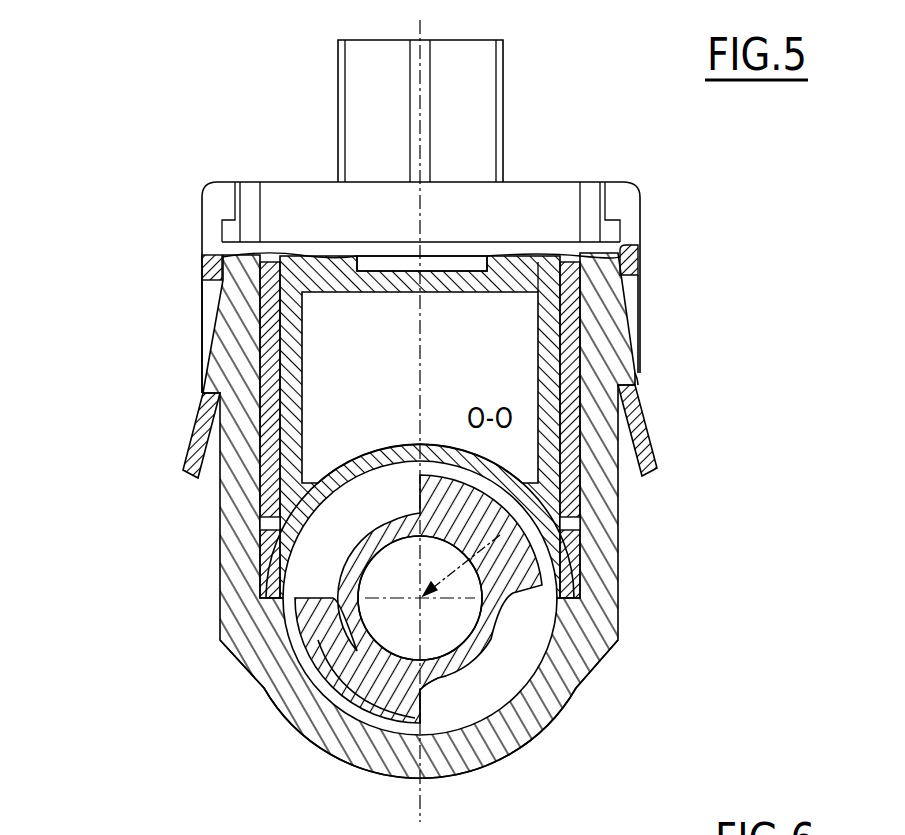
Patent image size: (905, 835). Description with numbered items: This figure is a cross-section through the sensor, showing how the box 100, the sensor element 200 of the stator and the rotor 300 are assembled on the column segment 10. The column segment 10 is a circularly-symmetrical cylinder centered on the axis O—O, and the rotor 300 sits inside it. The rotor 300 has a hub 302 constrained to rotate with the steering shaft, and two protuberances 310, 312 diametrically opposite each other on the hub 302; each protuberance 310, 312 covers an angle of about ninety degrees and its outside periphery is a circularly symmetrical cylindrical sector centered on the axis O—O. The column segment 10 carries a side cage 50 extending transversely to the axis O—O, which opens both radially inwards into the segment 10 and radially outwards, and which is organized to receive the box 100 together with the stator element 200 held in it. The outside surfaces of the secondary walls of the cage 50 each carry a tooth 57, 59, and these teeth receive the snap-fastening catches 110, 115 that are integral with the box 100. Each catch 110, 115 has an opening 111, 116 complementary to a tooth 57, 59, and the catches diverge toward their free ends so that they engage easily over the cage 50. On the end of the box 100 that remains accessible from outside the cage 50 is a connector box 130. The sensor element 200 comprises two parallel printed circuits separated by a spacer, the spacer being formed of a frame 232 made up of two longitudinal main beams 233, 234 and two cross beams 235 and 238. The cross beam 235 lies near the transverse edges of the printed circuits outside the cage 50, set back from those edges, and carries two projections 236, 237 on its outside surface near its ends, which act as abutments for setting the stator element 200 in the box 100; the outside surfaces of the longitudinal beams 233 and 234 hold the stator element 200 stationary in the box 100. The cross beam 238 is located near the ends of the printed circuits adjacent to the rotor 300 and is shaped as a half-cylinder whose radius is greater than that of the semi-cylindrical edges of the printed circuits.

The column segment 10 is at (278, 680).
The side cage 50 is at (240, 583).
The tooth 57 is at (206, 358).
The tooth 59 is at (640, 377).
The box 100 is at (540, 190).
The snap-fastening catch 110 is at (212, 262).
The opening 111 is at (206, 310).
The snap-fastening catch 115 is at (640, 263).
The opening 116 is at (628, 300).
The connector box 130 is at (470, 90).
The sensor element 200 is at (575, 493).
The frame 232 is at (267, 513).
The longitudinal main beam 233 is at (268, 462).
The longitudinal main beam 234 is at (603, 347).
The cross beam 235 is at (385, 282).
The projection 236 is at (323, 258).
The projection 237 is at (537, 265).
The cross beam 238 is at (355, 470).
The rotor 300 is at (430, 693).
The hub 302 is at (483, 690).
The protuberance 310 is at (335, 730).
The protuberance 312 is at (548, 545).